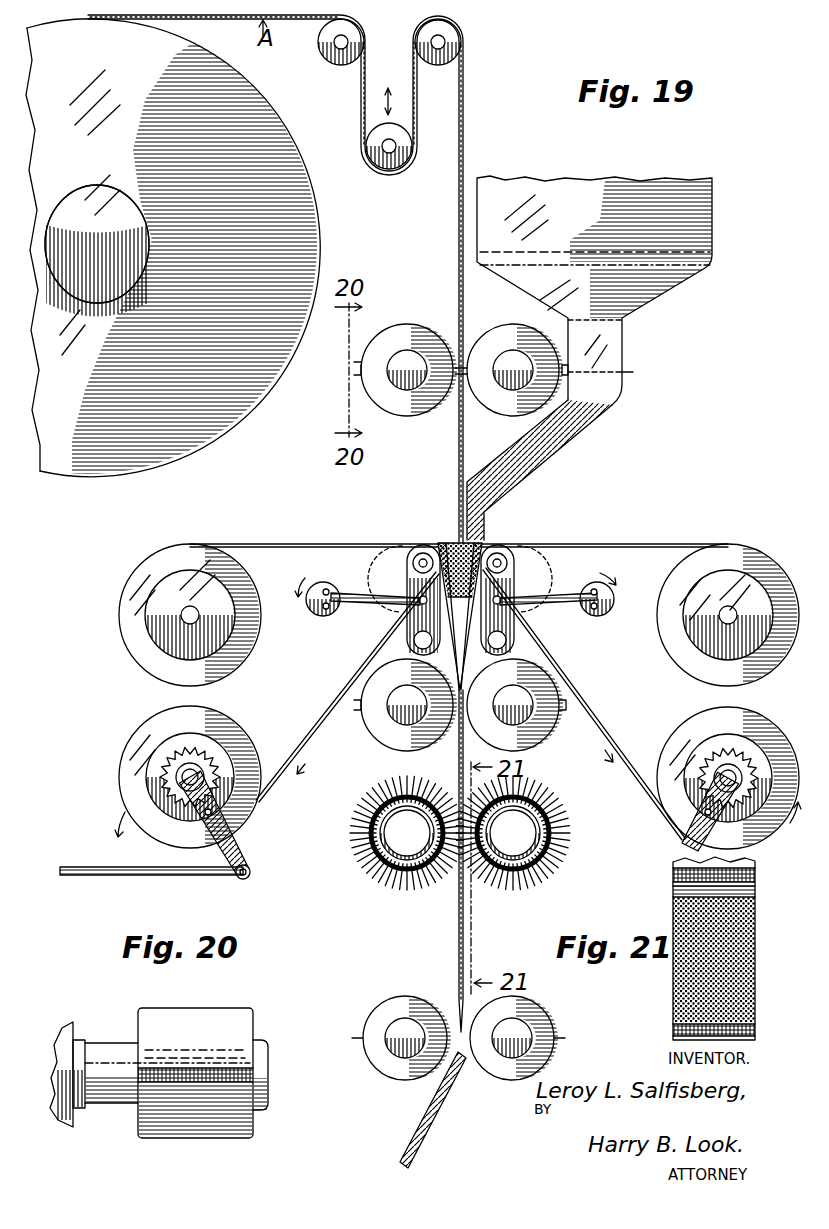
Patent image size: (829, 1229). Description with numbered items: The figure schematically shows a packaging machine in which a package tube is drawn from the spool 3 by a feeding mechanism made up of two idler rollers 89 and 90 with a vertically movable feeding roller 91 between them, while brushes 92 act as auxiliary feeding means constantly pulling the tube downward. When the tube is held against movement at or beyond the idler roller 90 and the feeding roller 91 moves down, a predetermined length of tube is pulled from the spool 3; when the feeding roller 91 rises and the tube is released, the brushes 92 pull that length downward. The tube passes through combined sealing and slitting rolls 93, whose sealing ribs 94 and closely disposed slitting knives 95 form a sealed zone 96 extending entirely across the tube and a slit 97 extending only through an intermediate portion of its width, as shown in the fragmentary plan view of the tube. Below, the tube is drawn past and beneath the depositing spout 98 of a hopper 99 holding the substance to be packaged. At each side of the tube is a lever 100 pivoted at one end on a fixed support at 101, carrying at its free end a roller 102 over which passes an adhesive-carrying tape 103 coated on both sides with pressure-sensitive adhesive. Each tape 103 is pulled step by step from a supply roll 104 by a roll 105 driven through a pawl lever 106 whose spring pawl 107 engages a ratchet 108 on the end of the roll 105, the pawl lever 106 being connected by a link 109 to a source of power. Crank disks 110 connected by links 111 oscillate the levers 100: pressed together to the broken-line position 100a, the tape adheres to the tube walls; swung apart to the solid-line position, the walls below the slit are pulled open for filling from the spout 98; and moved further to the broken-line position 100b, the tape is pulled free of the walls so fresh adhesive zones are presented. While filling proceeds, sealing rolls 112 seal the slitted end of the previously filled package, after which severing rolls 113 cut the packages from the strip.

In FIG. 19, the spool 3 is at (302, 220).
In FIG. 19, the idler roller 89 is at (338, 65).
In FIG. 19, the idler roller 90 is at (460, 47).
In FIG. 19, the feeding roller 91 is at (394, 160).
In FIG. 19, the brushes 92 is at (372, 868).
In FIG. 19, the combined sealing and slitting rolls 93 is at (408, 326).
In FIG. 19, the sealing ribs 94 is at (354, 377).
In FIG. 19, the slitting knives 95 is at (356, 358).
In FIG. 21, the sealed zone 96 is at (673, 874).
In FIG. 21, the slit 97 is at (757, 880).
In FIG. 19, the depositing spout 98 is at (576, 424).
In FIG. 19, the hopper 99 is at (656, 286).
In FIG. 19, the levers 100 is at (407, 582).
In FIG. 19, the broken-line position of levers 100a is at (458, 542).
In FIG. 19, the broken-line position of levers 100b is at (403, 533).
In FIG. 19, the pivot on fixed support 101 is at (506, 640).
In FIG. 19, the roller 102 is at (499, 549).
In FIG. 19, the adhesive-carrying tape 103 is at (282, 533).
In FIG. 19, the supply roll 104 is at (150, 563).
In FIG. 19, the roll 105 is at (137, 748).
In FIG. 19, the pawl lever 106 is at (240, 851).
In FIG. 19, the spring pawl 107 is at (733, 815).
In FIG. 19, the ratchet 108 is at (746, 760).
In FIG. 19, the link 109 is at (78, 866).
In FIG. 19, the crank disks 110 is at (317, 613).
In FIG. 19, the links 111 is at (550, 593).
In FIG. 19, the sealing rolls 112 is at (372, 734).
In FIG. 19, the severing rolls 113 is at (383, 1006).